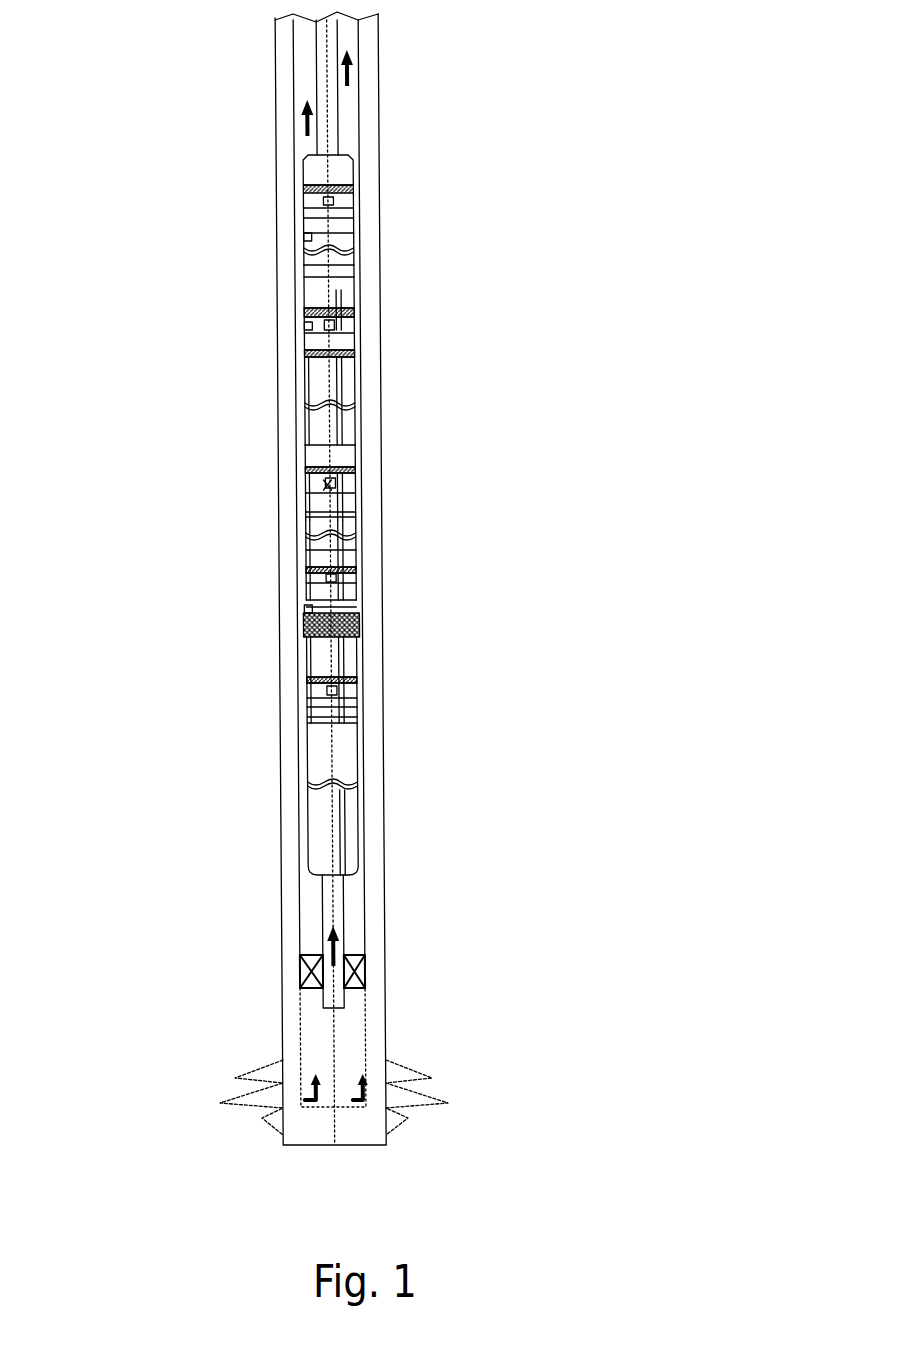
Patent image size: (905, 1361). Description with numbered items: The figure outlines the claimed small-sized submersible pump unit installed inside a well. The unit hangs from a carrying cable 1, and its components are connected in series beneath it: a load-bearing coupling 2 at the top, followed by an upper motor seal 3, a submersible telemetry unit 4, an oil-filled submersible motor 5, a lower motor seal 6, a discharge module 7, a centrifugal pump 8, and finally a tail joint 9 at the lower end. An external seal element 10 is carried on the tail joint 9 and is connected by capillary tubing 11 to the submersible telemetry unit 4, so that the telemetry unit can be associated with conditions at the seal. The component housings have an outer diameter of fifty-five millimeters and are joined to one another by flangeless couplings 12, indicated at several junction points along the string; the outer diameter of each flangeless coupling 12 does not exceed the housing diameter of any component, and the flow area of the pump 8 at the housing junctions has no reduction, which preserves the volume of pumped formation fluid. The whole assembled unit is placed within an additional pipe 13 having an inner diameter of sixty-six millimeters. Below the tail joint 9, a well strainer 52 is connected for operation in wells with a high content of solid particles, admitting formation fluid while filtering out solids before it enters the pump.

The carrying cable 1 is at (327, 60).
The load-bearing coupling 2 is at (543, 106).
The upper motor seal 3 is at (538, 210).
The submersible telemetry unit 4 is at (545, 309).
The oil-filled submersible motor 5 is at (540, 421).
The lower motor seal 6 is at (547, 624).
The discharge module 7 is at (548, 740).
The centrifugal pump 8 is at (553, 842).
The tail joint 9 is at (550, 1040).
The external seal element 10 is at (308, 962).
The capillary tubing 11 is at (560, 516).
The flangeless coupling 12 is at (202, 425).
The additional pipe 13 is at (570, 935).
The well strainer 52 is at (312, 1036).